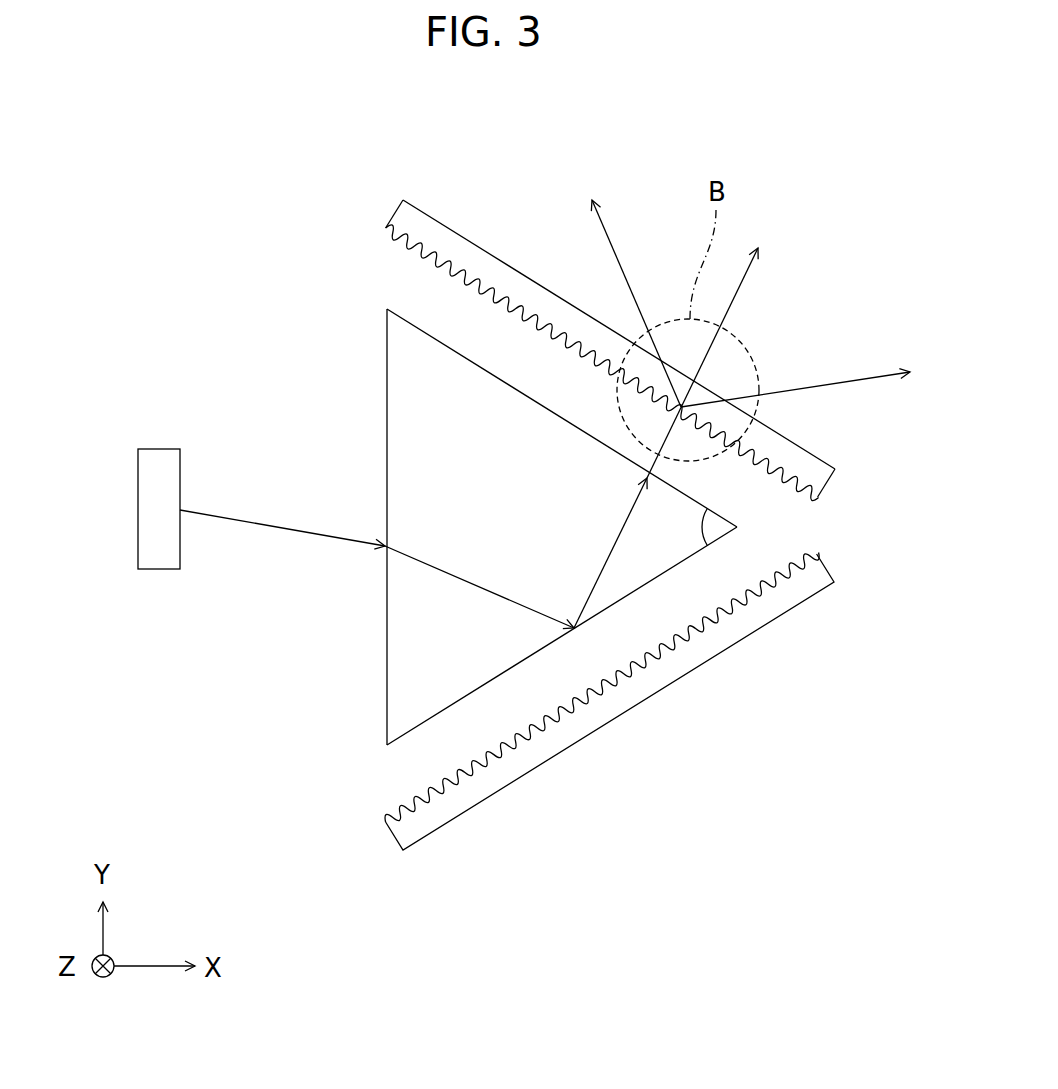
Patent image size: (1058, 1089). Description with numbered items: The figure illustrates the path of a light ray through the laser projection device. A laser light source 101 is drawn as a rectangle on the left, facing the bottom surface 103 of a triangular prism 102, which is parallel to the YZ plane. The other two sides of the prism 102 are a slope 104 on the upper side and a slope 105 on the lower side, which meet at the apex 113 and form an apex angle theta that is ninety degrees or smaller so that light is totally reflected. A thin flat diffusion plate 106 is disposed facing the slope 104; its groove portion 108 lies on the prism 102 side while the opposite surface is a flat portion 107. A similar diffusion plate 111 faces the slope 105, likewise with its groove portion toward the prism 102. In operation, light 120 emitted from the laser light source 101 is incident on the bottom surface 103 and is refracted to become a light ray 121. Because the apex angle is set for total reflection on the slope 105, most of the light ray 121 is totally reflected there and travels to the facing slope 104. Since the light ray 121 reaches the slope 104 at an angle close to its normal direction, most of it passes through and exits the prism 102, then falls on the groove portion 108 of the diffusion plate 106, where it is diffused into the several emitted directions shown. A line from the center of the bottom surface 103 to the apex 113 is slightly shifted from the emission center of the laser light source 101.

The laser light source 101 is at (138, 510).
The prism 102 is at (510, 543).
The bottom surface 103 is at (388, 696).
The slope 104 is at (417, 328).
The slope 105 is at (428, 720).
The diffusion plate 106 is at (559, 325).
The flat portion 107 is at (497, 258).
The groove portion 108 is at (437, 259).
The diffusion plate 111 is at (396, 838).
The apex 113 is at (738, 527).
The light 120 is at (268, 526).
The light ray 121 is at (470, 588).